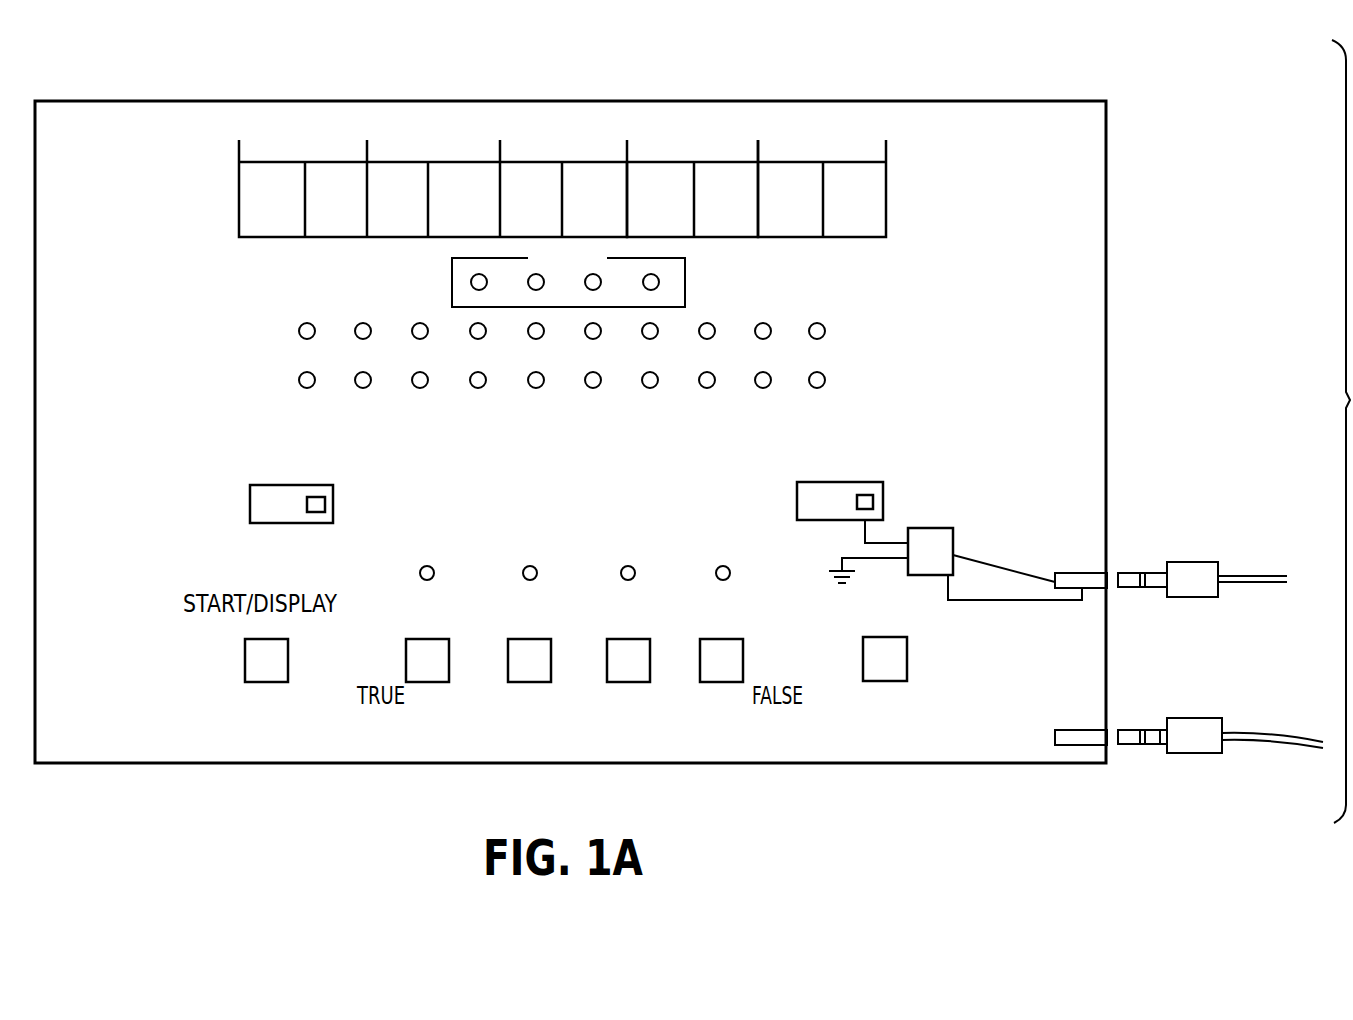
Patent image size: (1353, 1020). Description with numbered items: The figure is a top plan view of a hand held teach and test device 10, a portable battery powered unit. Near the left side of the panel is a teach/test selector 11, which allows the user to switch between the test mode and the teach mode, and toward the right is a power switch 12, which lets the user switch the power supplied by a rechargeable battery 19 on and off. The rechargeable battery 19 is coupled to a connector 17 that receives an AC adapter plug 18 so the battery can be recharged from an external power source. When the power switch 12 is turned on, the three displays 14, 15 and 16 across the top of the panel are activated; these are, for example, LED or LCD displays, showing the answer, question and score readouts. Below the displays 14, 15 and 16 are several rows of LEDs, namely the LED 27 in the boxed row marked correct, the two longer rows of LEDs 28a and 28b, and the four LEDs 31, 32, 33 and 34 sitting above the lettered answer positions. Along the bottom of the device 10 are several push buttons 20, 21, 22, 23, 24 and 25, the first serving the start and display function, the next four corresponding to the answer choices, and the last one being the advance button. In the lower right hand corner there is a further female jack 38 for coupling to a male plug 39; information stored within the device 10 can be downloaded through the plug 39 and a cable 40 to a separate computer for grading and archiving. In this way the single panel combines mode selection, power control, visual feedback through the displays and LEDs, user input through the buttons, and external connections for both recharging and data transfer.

The teach and test device 10 is at (1112, 185).
The teach/test selector 11 is at (275, 473).
The power switch 12 is at (858, 475).
The display 14 is at (238, 92).
The display 15 is at (627, 93).
The display 16 is at (757, 93).
The connector 17 is at (1075, 572).
The AC adapter plug 18 is at (1193, 573).
The rechargeable battery 19 is at (944, 563).
The button 20 is at (280, 670).
The button 21 is at (441, 670).
The button 22 is at (543, 670).
The button 23 is at (642, 670).
The button 24 is at (735, 670).
The button 25 is at (899, 669).
The LED 27 is at (690, 284).
The LED 28a is at (829, 330).
The LED 28b is at (829, 380).
The LED 31 is at (432, 567).
The LED 32 is at (535, 567).
The LED 33 is at (633, 567).
The LED 34 is at (728, 567).
The female jack 38 is at (1076, 729).
The male plug 39 is at (1190, 733).
The cable 40 is at (1298, 737).